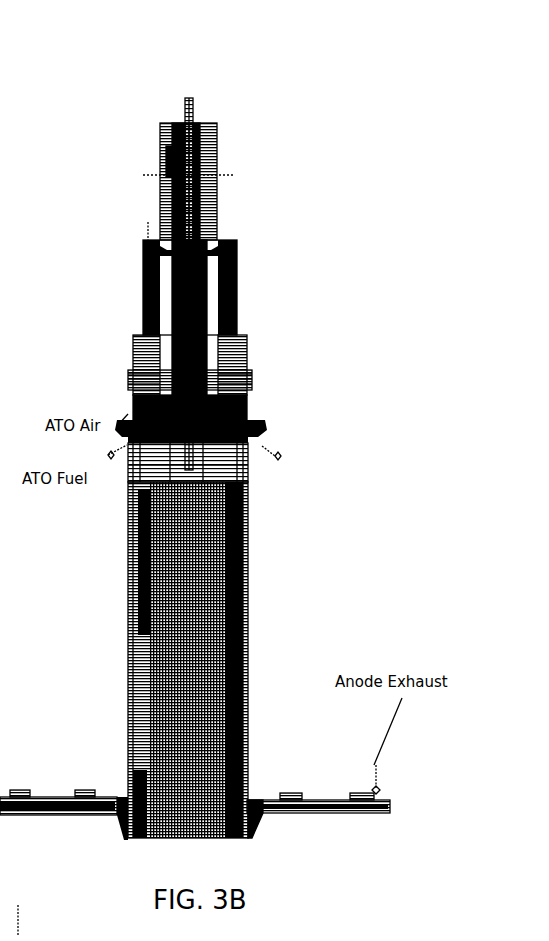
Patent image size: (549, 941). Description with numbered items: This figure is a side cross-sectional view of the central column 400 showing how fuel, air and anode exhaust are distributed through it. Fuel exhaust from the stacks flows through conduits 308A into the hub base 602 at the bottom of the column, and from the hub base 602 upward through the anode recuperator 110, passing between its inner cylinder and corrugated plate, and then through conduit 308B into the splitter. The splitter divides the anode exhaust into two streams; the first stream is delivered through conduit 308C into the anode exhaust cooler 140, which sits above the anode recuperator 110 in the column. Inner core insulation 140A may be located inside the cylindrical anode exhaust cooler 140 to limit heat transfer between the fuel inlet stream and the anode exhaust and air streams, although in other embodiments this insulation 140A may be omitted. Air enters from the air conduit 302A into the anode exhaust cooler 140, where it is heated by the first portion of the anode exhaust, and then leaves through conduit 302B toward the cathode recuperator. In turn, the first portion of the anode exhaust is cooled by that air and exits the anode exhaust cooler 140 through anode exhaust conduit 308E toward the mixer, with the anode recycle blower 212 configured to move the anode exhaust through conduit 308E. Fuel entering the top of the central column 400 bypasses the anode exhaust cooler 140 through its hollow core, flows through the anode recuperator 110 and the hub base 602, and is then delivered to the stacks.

The central column 400 is at (243, 100).
The anode exhaust conduit 308E is at (222, 189).
The anode recycle blower 212 is at (163, 146).
The air conduit 302A is at (127, 226).
The anode exhaust cooler 140 is at (248, 289).
The anode exhaust cooler inner core insulation 140A is at (214, 325).
The conduit 302B is at (147, 328).
The anode exhaust conduit 308C is at (248, 358).
The anode exhaust conduit 308B is at (251, 486).
The anode recuperator 110 is at (252, 559).
The anode exhaust conduit 308A is at (320, 799).
The hub base 602 is at (252, 838).